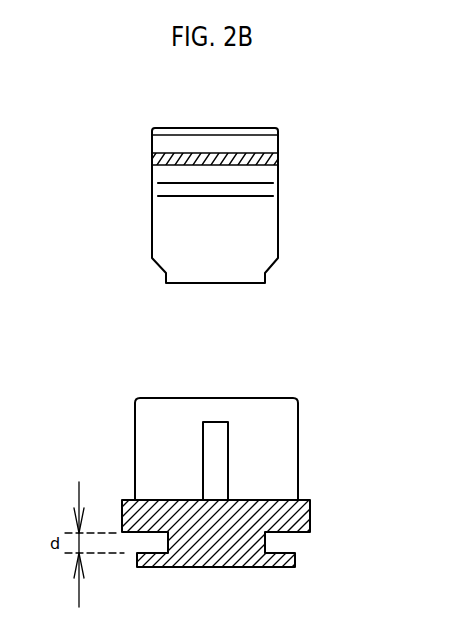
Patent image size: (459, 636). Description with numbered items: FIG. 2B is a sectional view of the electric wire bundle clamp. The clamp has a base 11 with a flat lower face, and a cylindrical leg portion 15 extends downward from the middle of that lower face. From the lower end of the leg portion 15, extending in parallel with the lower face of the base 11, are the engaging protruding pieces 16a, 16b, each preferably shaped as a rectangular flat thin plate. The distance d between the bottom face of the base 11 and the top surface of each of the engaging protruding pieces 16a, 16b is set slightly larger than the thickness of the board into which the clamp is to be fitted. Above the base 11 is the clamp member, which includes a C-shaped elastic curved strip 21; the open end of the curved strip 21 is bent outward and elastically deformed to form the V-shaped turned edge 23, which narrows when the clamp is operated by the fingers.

The base 11 is at (310, 500).
The leg portion 15 is at (273, 540).
The engaging protruding piece 16a is at (148, 572).
The engaging protruding piece 16b is at (295, 567).
The C-shaped elastic curved strip 21 is at (278, 162).
The turned edge 23 is at (278, 248).